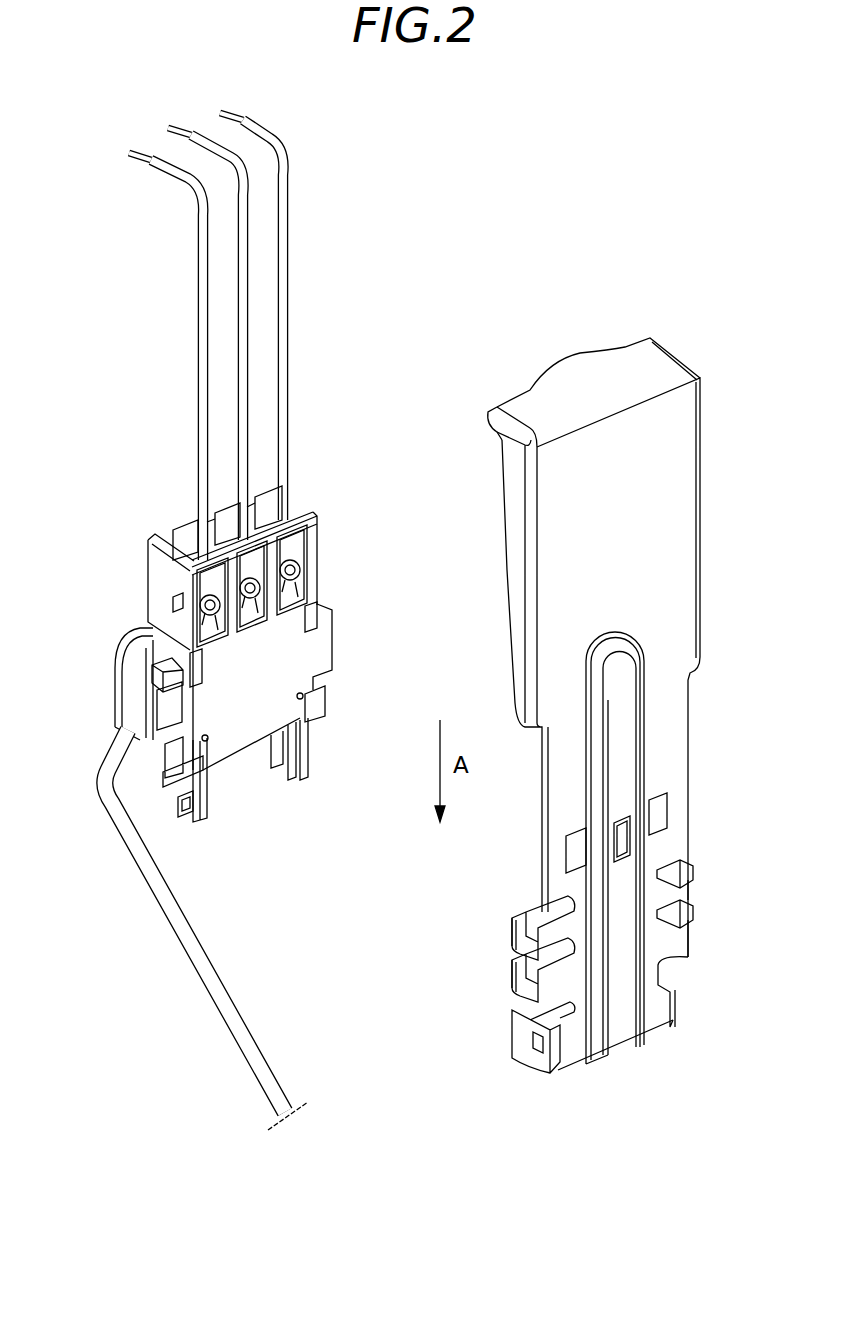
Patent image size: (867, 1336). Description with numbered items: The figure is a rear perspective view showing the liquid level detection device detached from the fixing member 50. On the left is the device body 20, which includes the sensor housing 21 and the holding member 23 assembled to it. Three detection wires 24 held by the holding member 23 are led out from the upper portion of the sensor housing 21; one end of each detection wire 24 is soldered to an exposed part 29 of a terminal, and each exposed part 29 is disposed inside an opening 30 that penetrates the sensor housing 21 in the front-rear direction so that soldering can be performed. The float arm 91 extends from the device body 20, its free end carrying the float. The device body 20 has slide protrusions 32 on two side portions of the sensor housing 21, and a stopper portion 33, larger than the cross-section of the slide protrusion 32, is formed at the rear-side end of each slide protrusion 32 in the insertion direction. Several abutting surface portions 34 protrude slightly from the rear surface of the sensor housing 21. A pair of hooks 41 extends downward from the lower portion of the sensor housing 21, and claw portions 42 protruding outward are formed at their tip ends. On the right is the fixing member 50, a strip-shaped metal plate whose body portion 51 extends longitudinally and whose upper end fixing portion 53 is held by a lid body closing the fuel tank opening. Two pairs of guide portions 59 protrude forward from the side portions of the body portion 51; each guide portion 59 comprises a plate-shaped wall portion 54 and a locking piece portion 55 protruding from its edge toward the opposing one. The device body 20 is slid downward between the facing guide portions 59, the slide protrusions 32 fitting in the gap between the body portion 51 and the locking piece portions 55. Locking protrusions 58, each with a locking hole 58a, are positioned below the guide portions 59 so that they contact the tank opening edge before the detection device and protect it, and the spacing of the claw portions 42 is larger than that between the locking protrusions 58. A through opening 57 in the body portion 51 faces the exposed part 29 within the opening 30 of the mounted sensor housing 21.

The device body 20 is at (233, 651).
The sensor housing 21 is at (118, 693).
The holding member 23 is at (147, 578).
The detection wires 24 is at (289, 300).
The exposed parts 29 is at (316, 553).
The opening 30 is at (195, 505).
The slide protrusions 32 is at (334, 652).
The stopper portion 33 is at (334, 613).
The abutting surface portions 34 is at (320, 612).
The hooks 41 is at (310, 765).
The claw portions 42 is at (180, 818).
The fixing member 50 is at (586, 697).
The body portion 51 is at (672, 533).
The upper end fixing portion 53 is at (553, 382).
The wall portions 54 is at (520, 945).
The locking piece portions 55 is at (596, 925).
The through opening 57 is at (620, 820).
The locking protrusions 58 is at (599, 1036).
The locking hole 58a is at (535, 1052).
The guide portions 59 is at (505, 931).
The float arm 91 is at (232, 995).